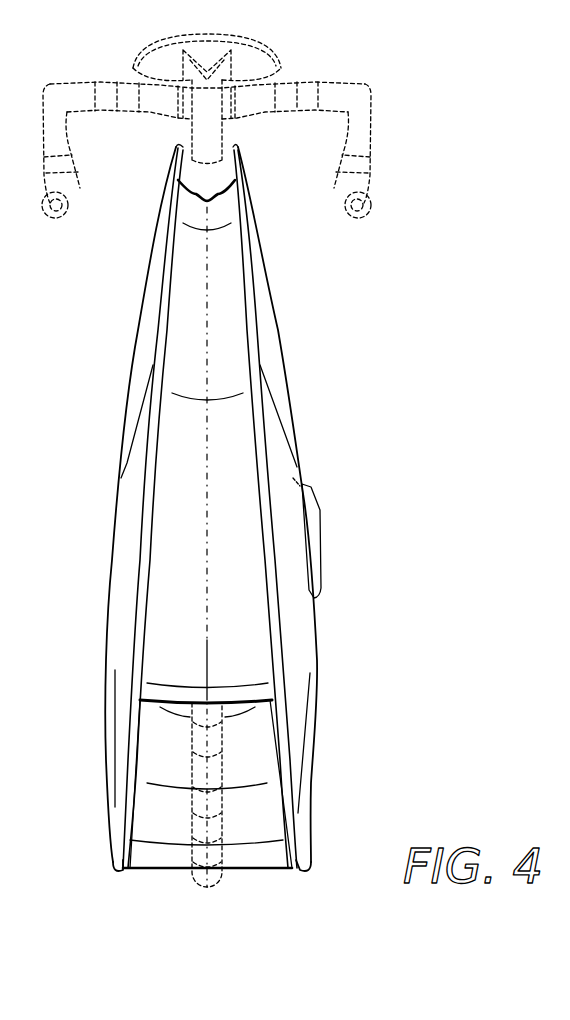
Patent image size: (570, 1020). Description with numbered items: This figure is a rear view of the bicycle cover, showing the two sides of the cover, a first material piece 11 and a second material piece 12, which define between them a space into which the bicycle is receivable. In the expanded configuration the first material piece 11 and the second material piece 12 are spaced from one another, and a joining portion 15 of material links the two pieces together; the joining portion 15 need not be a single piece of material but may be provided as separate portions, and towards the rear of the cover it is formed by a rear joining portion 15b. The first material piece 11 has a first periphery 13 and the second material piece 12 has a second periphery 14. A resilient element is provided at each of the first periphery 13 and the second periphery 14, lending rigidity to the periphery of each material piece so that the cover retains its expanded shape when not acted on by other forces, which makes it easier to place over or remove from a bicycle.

The first material piece 11 is at (140, 390).
The second material piece 12 is at (277, 368).
The first periphery 13 is at (157, 342).
The second periphery 14 is at (257, 320).
The joining portion 15 is at (237, 450).
The rear joining portion 15b is at (257, 661).